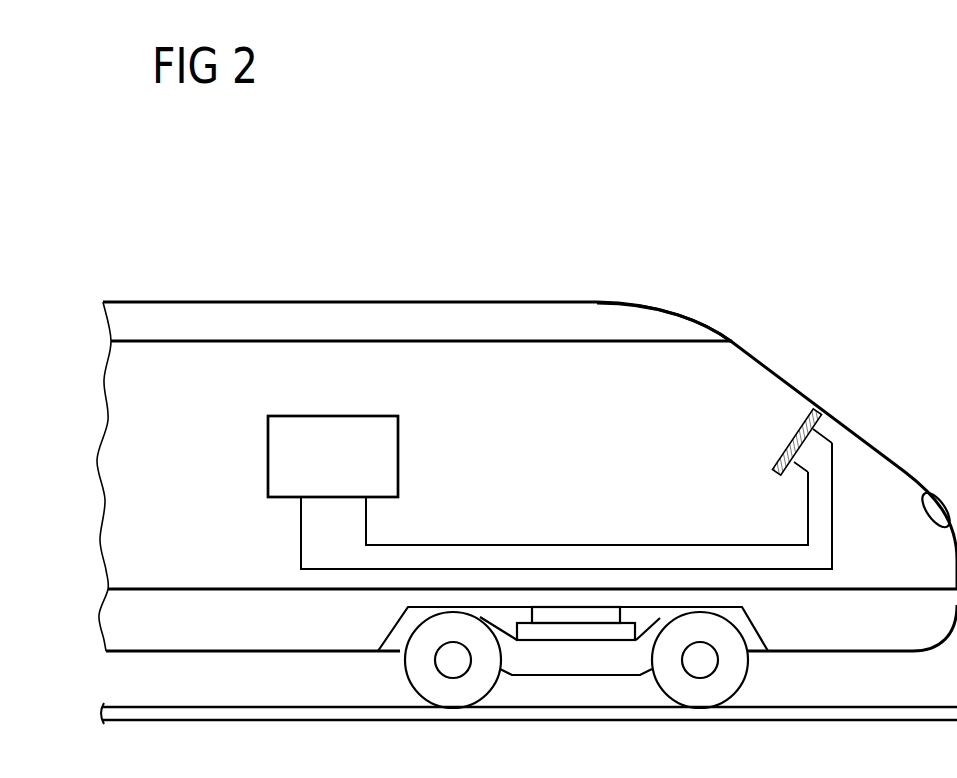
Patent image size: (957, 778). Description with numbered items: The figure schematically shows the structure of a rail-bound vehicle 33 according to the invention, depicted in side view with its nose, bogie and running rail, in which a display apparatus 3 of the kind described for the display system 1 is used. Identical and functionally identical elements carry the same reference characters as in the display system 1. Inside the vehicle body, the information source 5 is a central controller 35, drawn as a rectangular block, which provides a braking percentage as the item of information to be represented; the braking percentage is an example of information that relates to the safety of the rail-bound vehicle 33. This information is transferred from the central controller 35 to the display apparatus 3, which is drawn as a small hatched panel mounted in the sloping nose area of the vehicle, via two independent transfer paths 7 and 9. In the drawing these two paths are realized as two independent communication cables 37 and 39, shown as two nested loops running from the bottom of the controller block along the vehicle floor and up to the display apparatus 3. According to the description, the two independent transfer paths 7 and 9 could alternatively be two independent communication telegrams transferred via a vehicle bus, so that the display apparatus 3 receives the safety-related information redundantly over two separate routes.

The display system 1 is at (560, 428).
The display apparatus 3 is at (778, 432).
The information source 5 is at (268, 460).
The central controller 35 is at (333, 456).
The transfer path 7 is at (491, 545).
The communication cable 37 is at (587, 508).
The transfer path 9 is at (653, 566).
The communication cable 39 is at (566, 506).
The rail-bound vehicle 33 is at (283, 290).